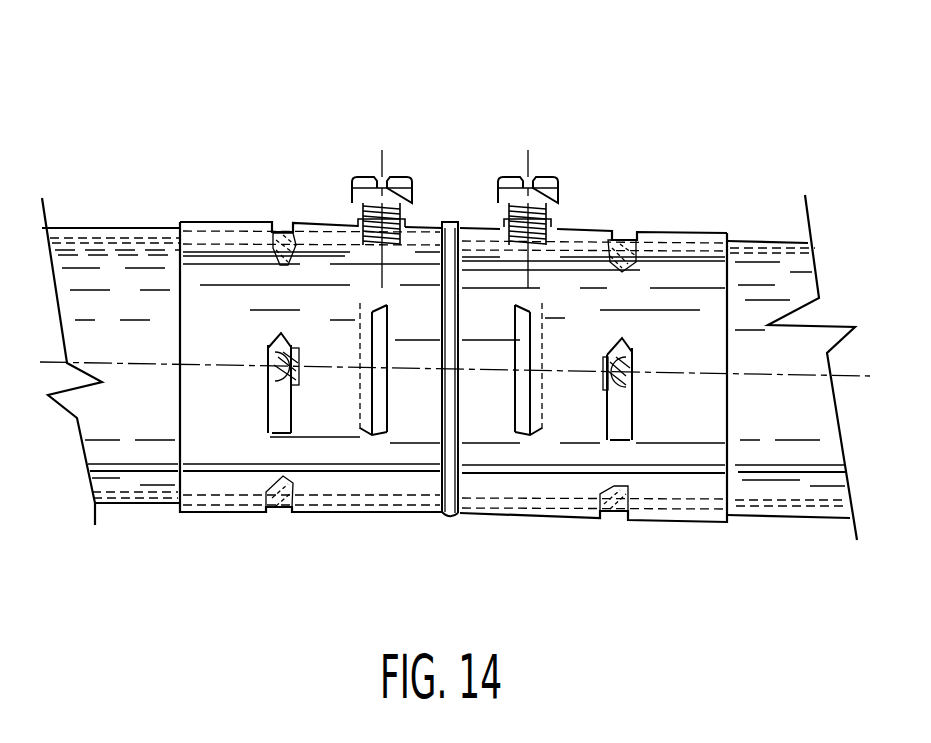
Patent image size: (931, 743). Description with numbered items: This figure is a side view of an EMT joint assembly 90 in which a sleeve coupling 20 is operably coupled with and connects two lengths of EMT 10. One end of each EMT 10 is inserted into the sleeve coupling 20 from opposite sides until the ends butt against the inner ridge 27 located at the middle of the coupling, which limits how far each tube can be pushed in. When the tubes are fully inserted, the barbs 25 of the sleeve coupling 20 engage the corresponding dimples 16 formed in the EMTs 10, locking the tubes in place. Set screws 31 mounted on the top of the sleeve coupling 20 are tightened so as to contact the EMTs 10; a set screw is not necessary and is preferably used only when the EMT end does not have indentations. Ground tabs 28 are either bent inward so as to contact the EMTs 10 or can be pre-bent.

The EMT 10 is at (108, 229).
The dimple 16 is at (272, 337).
The sleeve coupling 20 is at (383, 521).
The barb 25 is at (283, 235).
The inner ridge 27 is at (452, 226).
The ground tab 28 is at (362, 325).
The set screw 31 is at (399, 188).
The EMT joint assembly 90 is at (759, 122).